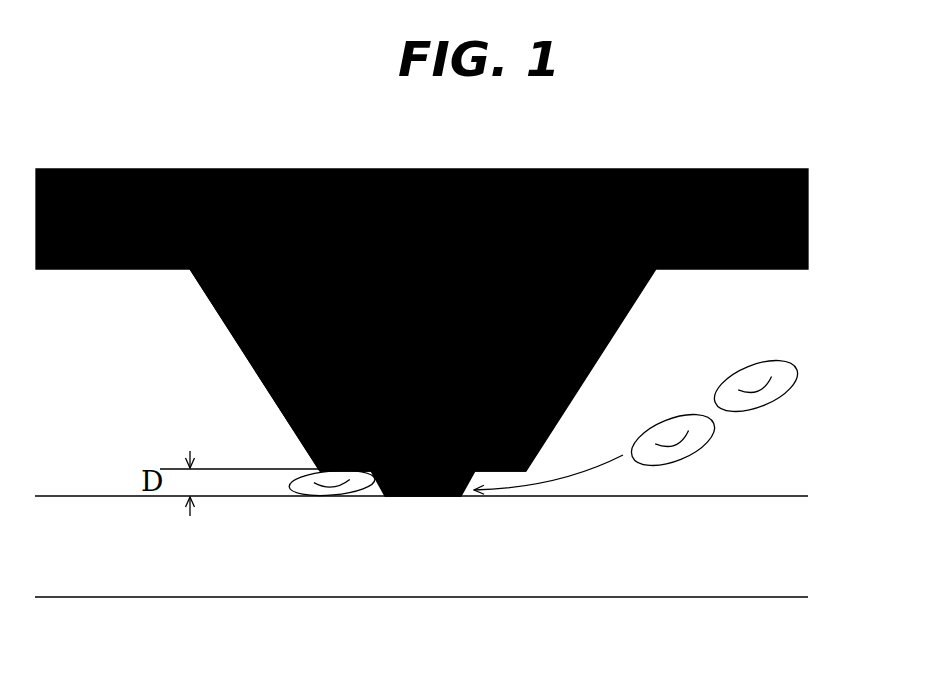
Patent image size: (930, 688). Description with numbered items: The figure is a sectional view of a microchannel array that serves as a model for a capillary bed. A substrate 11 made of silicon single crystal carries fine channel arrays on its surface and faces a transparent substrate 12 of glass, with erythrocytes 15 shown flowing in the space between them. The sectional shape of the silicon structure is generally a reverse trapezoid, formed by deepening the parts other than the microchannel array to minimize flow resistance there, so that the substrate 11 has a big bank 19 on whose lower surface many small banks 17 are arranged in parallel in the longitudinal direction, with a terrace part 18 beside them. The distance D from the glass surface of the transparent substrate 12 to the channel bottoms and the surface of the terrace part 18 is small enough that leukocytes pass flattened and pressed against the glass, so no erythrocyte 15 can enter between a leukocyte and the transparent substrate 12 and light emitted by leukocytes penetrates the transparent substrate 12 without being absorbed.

The substrate 11 is at (801, 212).
The transparent substrate 12 is at (775, 538).
The erythrocyte 15 is at (708, 440).
The small bank 17 is at (407, 489).
The terrace part 18 is at (285, 423).
The big bank 19 is at (217, 317).